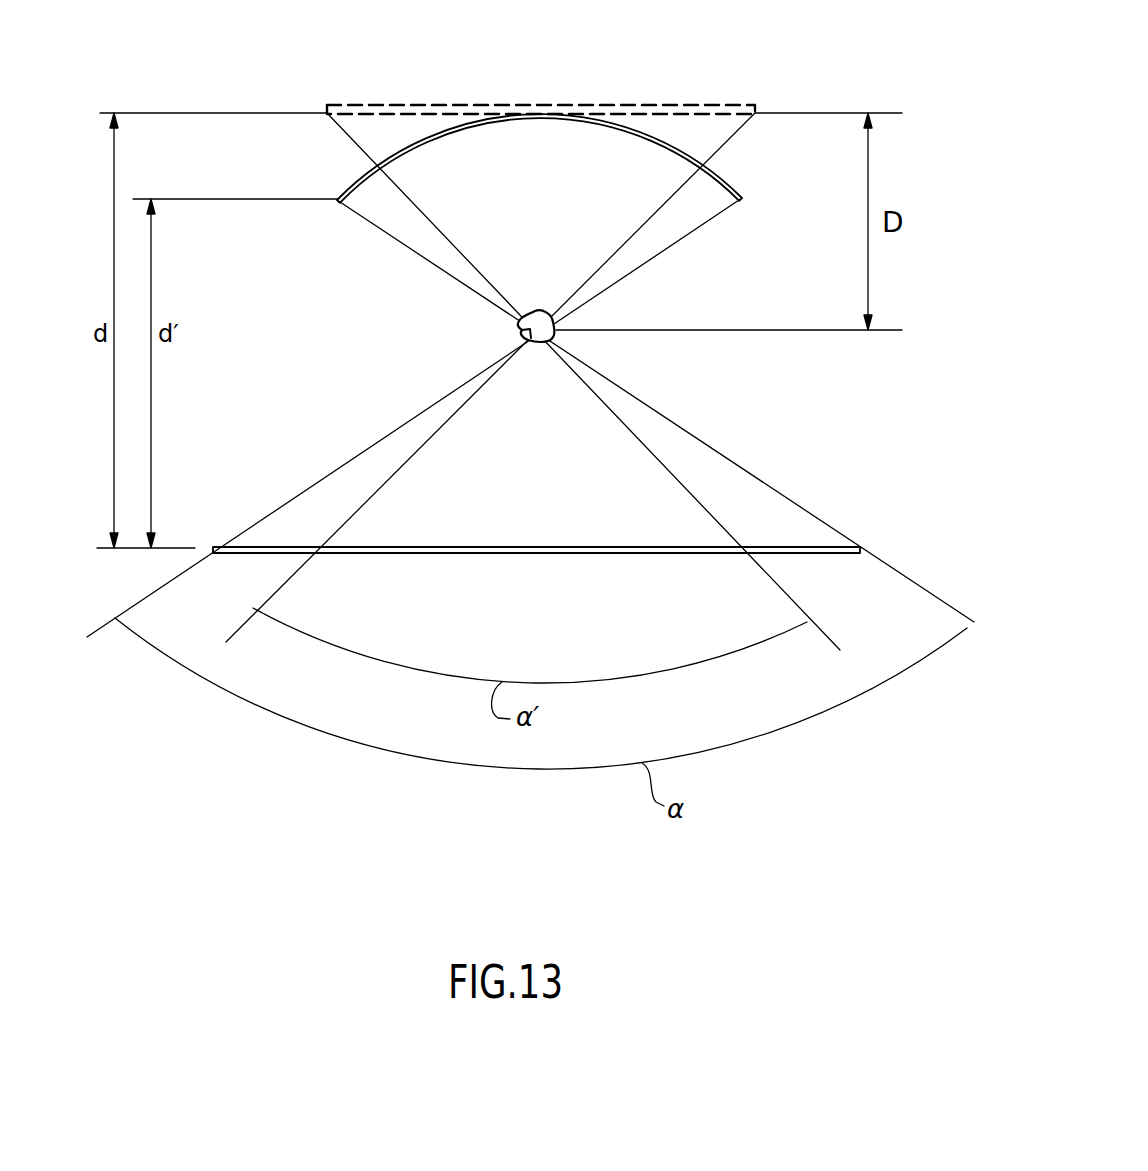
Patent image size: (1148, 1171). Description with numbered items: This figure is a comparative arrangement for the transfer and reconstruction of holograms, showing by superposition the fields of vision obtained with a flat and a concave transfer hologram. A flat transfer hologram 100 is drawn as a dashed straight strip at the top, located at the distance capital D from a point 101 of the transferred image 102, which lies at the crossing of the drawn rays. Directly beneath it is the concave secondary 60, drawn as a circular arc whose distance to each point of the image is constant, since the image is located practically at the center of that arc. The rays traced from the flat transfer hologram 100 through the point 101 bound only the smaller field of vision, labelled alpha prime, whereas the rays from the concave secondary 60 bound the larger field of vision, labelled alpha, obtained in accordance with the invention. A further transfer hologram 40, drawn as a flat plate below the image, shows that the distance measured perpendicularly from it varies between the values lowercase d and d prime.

The flat transfer hologram 100 is at (667, 105).
The concave secondary hologram 60 is at (728, 182).
The point of the transferred image 101 is at (520, 332).
The transferred image 102 is at (529, 346).
The transfer hologram 40 is at (765, 547).